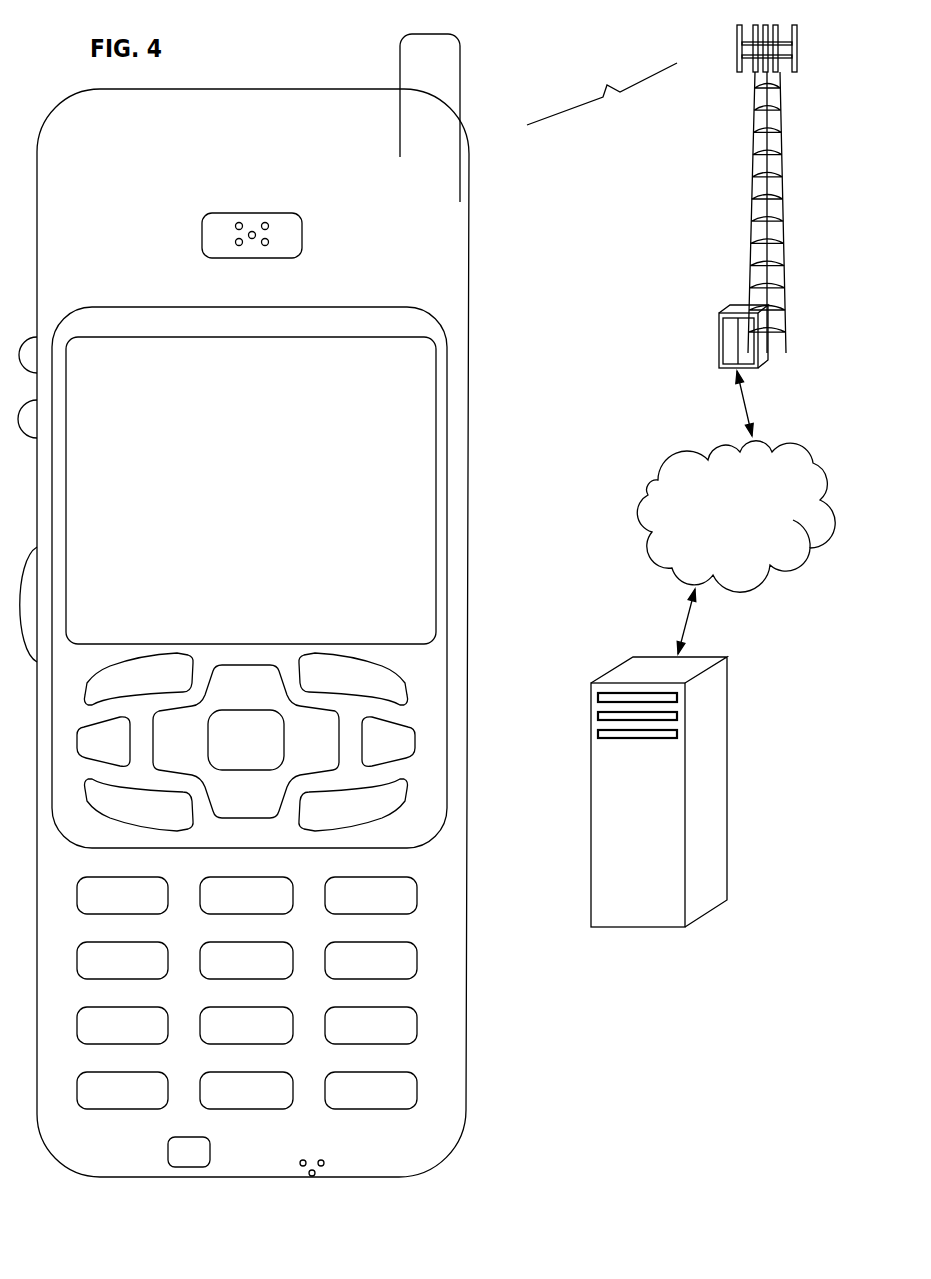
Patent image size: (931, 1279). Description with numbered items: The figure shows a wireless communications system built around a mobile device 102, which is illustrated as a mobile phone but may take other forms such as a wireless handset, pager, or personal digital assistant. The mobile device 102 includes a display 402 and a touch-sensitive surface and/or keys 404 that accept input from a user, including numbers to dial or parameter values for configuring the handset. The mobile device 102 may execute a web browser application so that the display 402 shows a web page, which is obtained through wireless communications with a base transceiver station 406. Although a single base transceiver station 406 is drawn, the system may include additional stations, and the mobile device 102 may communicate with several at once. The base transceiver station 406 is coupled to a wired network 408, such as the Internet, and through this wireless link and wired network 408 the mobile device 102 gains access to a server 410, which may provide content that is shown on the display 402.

The mobile device 102 is at (112, 1177).
The display 402 is at (436, 350).
The keys 404 is at (474, 1114).
The base transceiver station 406 is at (750, 209).
The wired network 408 is at (664, 563).
The server 410 is at (633, 927).